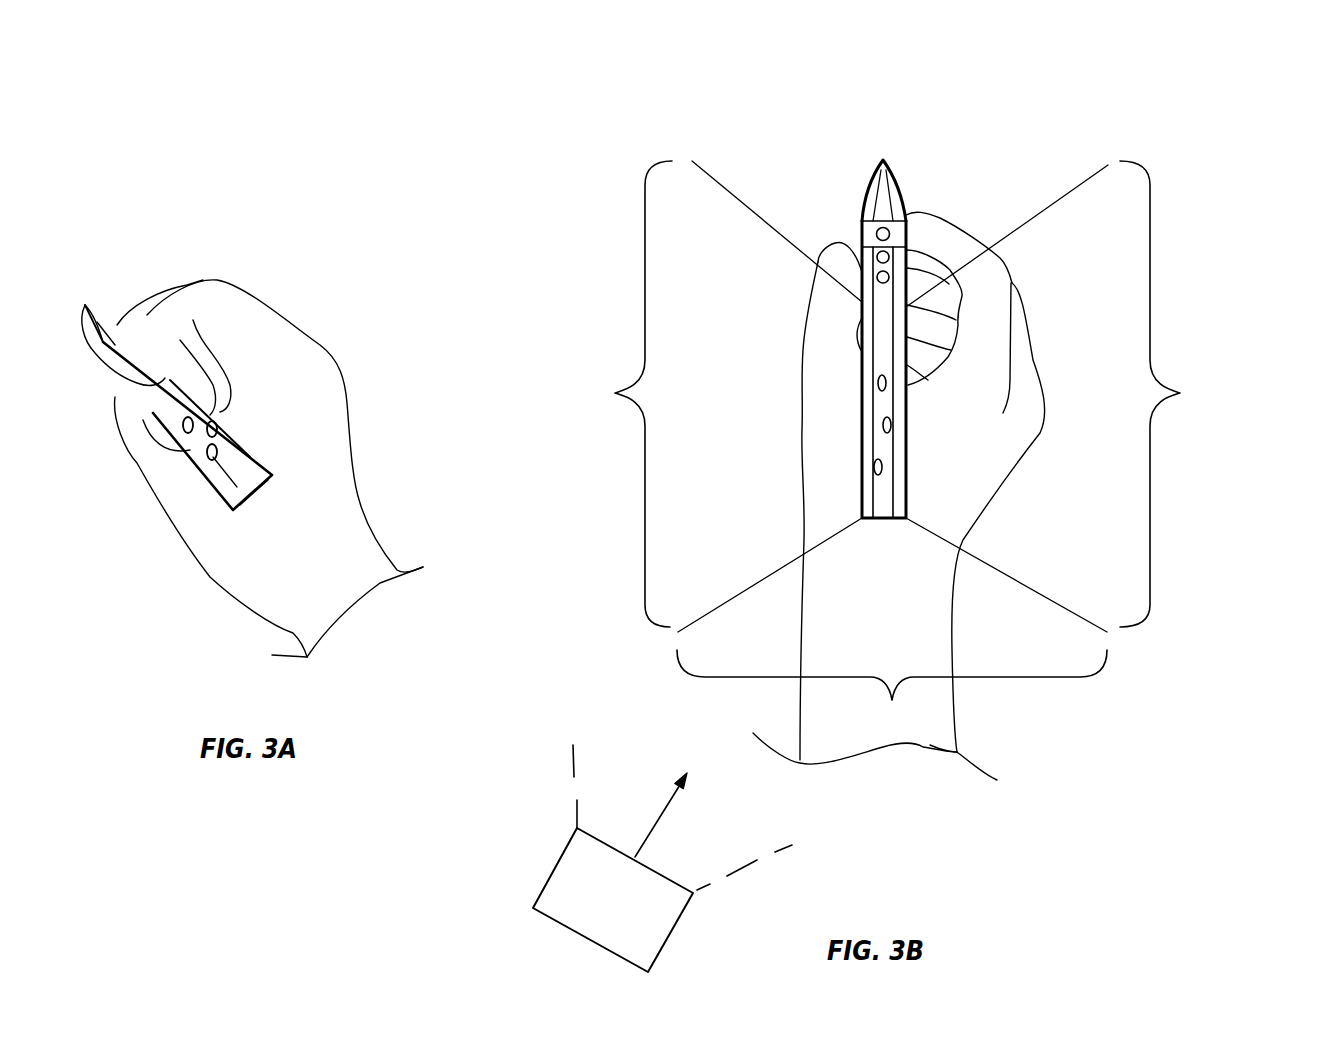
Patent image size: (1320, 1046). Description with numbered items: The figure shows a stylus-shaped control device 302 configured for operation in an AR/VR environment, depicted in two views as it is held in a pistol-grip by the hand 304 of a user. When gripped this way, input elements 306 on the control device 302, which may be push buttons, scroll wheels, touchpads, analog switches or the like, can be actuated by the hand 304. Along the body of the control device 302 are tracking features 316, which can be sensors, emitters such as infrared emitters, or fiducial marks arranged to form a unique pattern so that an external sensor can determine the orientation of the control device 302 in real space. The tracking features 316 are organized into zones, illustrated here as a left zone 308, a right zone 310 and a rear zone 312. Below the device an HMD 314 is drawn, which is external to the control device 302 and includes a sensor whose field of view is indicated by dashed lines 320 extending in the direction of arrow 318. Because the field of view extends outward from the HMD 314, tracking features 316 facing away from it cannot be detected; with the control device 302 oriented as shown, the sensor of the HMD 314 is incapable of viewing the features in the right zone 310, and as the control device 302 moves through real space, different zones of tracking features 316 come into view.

In FIG. 3A, the control device 302 is at (314, 282).
In FIG. 3B, the control device 302 is at (721, 291).
In FIG. 3A, the hand of user 304 is at (295, 597).
In FIG. 3B, the hand of user 304 is at (827, 733).
In FIG. 3A, the input elements 306 is at (120, 320).
In FIG. 3B, the input elements 306 is at (863, 220).
In FIG. 3B, the left zone 308 is at (710, 396).
In FIG. 3B, the right zone 310 is at (1074, 396).
In FIG. 3B, the rear zone 312 is at (892, 694).
In FIG. 3B, the HMD 314 is at (613, 900).
In FIG. 3A, the tracking features 316 is at (218, 452).
In FIG. 3B, the tracking features 316 is at (715, 393).
In FIG. 3B, the arrow 318 is at (655, 820).
In FIG. 3B, the dashed lines 320 is at (577, 808).